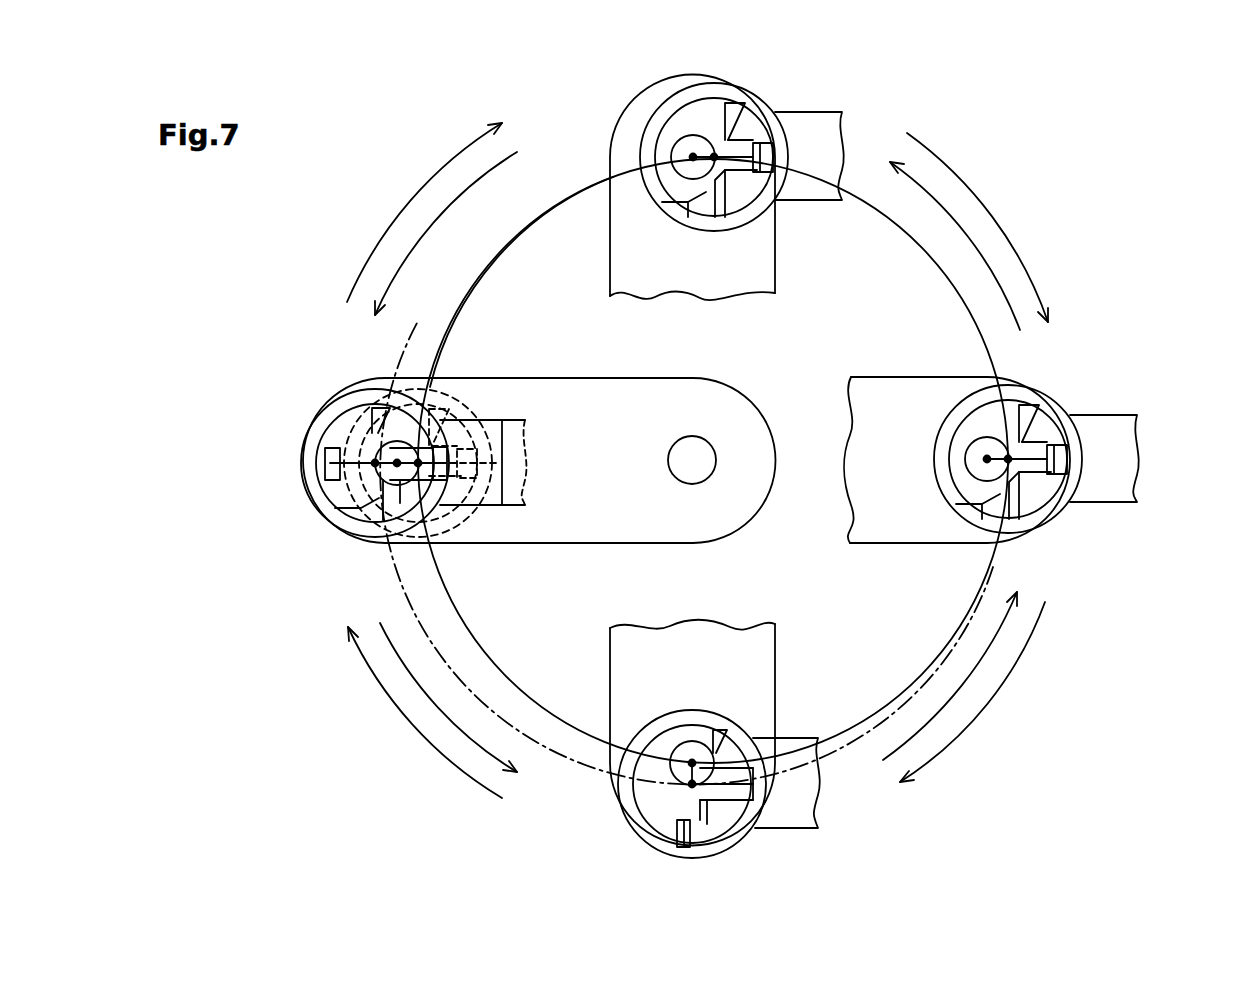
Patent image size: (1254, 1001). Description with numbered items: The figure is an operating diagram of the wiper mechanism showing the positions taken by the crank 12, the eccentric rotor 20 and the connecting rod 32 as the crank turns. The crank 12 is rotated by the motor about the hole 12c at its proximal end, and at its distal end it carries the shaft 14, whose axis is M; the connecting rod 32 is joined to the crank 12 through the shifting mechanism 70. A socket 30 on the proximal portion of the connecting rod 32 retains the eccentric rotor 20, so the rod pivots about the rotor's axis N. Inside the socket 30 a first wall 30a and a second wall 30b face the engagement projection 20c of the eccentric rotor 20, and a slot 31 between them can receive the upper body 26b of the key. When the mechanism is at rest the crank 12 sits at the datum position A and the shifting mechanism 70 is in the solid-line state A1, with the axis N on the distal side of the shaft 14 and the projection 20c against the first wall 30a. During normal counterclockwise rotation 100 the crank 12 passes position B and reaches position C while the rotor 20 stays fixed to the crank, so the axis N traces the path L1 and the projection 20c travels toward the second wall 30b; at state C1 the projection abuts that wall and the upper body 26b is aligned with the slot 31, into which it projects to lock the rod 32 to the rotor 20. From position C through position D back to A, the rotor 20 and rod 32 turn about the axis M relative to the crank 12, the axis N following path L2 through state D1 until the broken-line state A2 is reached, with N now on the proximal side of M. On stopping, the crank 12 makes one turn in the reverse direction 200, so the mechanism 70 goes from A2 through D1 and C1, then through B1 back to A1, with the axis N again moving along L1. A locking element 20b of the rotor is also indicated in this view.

The crank 12 is at (767, 277).
The hole 12c is at (684, 448).
The shaft 14 is at (672, 146).
The eccentric rotor 20 is at (328, 492).
The engaging portion 20b is at (1042, 436).
The engagement projection 20c is at (744, 130).
The upper body 26b is at (757, 172).
The socket 30 is at (660, 200).
The first wall 30a is at (732, 112).
The second wall 30b is at (724, 182).
The slot 31 is at (774, 152).
The connecting rod 32 is at (826, 137).
The shifting mechanism 70 is at (302, 461).
The counterclockwise direction 100 is at (517, 152).
The reverse direction 200 is at (407, 203).
The path L1 is at (550, 755).
The path L2 is at (473, 287).
The axis M is at (690, 156).
The axis N is at (713, 152).
The datum position A is at (195, 467).
The solid-line position A1 is at (318, 398).
The broken-line position A2 is at (467, 402).
The position B is at (690, 892).
The state B1 is at (637, 856).
The position C is at (1221, 464).
The position C1 is at (1052, 378).
The position D is at (690, 39).
The position D1 is at (752, 75).